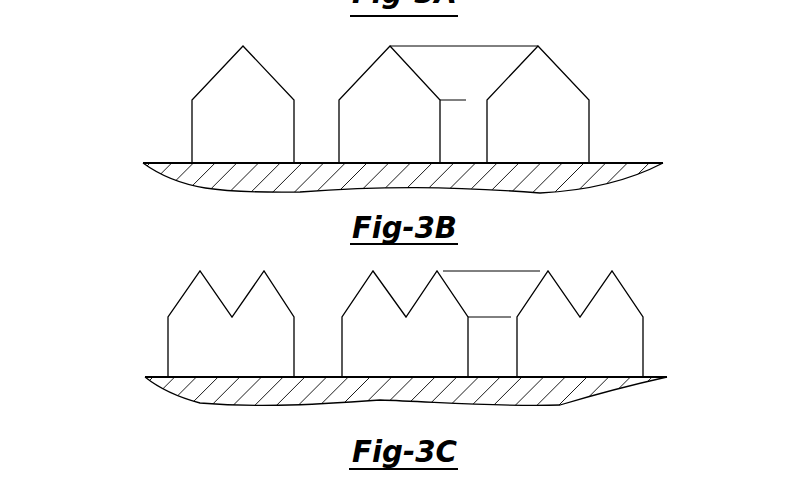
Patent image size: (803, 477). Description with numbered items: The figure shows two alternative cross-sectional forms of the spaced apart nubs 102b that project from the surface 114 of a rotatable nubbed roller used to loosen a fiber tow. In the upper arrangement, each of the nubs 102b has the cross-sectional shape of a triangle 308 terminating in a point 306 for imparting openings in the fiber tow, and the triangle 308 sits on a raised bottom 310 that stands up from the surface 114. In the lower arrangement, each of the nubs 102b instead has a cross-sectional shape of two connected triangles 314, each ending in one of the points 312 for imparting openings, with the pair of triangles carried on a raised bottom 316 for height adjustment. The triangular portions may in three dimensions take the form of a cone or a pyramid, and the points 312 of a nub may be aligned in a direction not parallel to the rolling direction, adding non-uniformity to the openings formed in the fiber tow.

In FIG. 3B, the spaced apart nubs 102b is at (182, 82).
In FIG. 3C, the spaced apart nubs 102b is at (152, 302).
In FIG. 3B, the surface 114 is at (622, 163).
In FIG. 3C, the surface 114 is at (648, 377).
In FIG. 3B, the point 306 is at (384, 42).
In FIG. 3B, the triangle 308 is at (456, 46).
In FIG. 3B, the raised bottom 310 is at (456, 100).
In FIG. 3C, the points 312 is at (211, 268).
In FIG. 3C, the two connected triangles 314 is at (492, 317).
In FIG. 3C, the raised bottom 316 is at (492, 317).